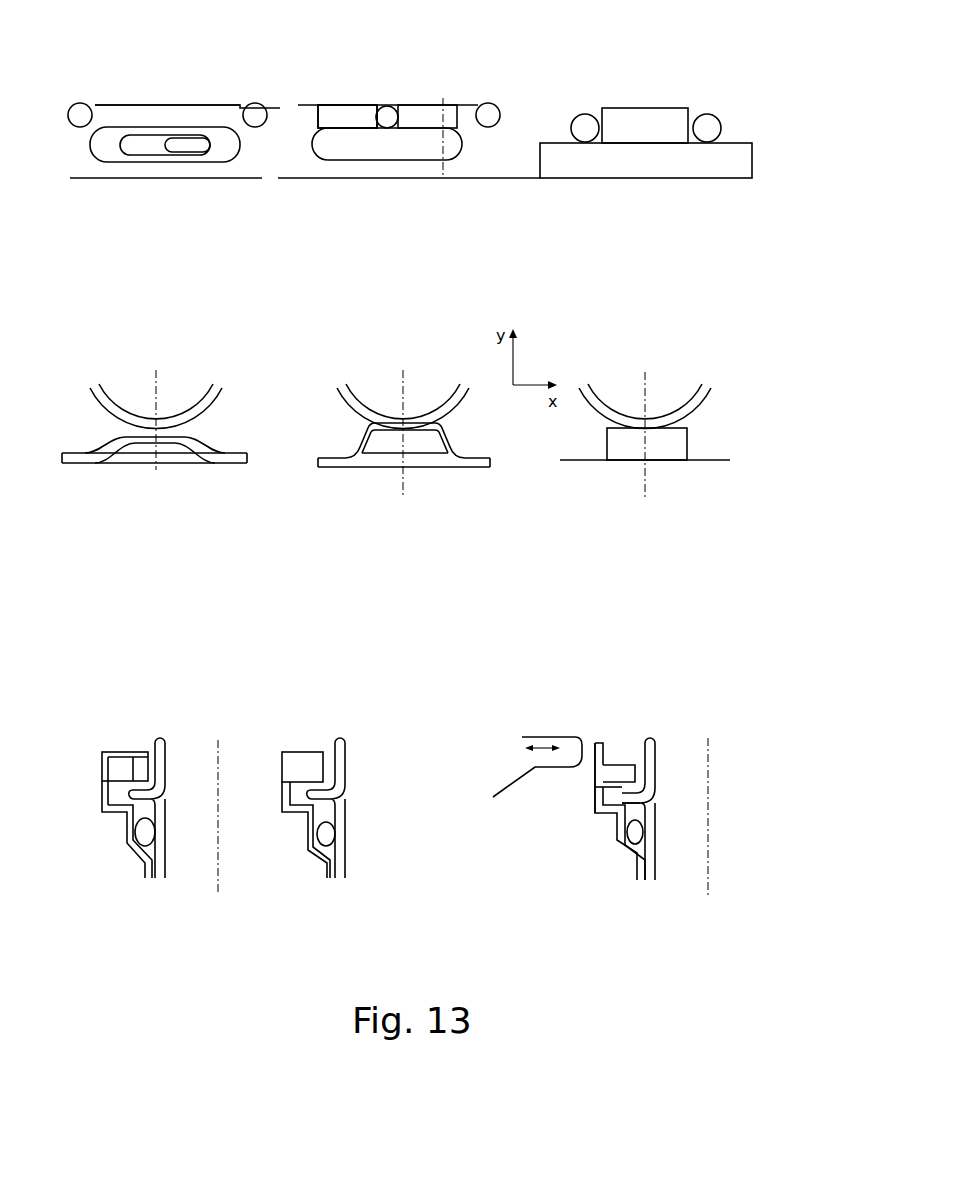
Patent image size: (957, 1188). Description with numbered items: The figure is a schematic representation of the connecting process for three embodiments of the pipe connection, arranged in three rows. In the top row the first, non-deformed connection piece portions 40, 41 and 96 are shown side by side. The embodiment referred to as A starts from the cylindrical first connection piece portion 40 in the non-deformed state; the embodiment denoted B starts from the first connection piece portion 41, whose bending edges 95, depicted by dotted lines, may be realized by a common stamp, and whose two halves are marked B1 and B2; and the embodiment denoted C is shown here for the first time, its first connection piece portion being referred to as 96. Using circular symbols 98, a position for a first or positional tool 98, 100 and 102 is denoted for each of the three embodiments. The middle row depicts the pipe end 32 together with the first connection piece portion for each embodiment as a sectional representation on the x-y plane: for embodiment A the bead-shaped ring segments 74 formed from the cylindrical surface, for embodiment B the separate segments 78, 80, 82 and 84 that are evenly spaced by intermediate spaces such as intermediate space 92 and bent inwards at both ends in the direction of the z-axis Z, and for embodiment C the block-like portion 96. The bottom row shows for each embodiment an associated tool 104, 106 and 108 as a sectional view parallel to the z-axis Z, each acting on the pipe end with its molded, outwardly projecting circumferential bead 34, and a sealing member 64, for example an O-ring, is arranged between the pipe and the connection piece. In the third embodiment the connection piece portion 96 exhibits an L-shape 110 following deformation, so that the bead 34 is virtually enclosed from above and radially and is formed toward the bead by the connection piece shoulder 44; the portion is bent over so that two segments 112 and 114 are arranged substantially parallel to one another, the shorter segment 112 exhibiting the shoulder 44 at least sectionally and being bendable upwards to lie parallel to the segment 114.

The first connection piece portion 40 is at (115, 110).
The first connection piece portion 41 is at (330, 112).
The positional tool 98 is at (78, 118).
The bending edges 95 is at (460, 118).
The positional tool 100 is at (388, 117).
The first connection piece portion 96 is at (637, 120).
The positional tool 102 is at (706, 128).
The intermediate space 92 is at (731, 108).
The pipe end 32 is at (202, 393).
The bead-shaped ring segments 74 is at (115, 437).
The segment 78 is at (322, 468).
The segment 80 is at (423, 489).
The segment 82 is at (423, 489).
The segment 84 is at (360, 463).
The bead 34 is at (163, 792).
The tool 104 is at (95, 769).
The tool 106 is at (276, 769).
The tool 108 is at (509, 795).
The sealing member 64 is at (330, 834).
The segment 114 is at (623, 765).
The L-shape 110 is at (652, 793).
The connection piece shoulder 44 is at (584, 824).
The segment 112 is at (608, 812).
The z-axis Z is at (218, 893).
The embodiment A is at (185, 247).
The embodiment B is at (372, 247).
The embodiment C is at (673, 165).
The block B1 is at (333, 113).
The block B2 is at (418, 115).